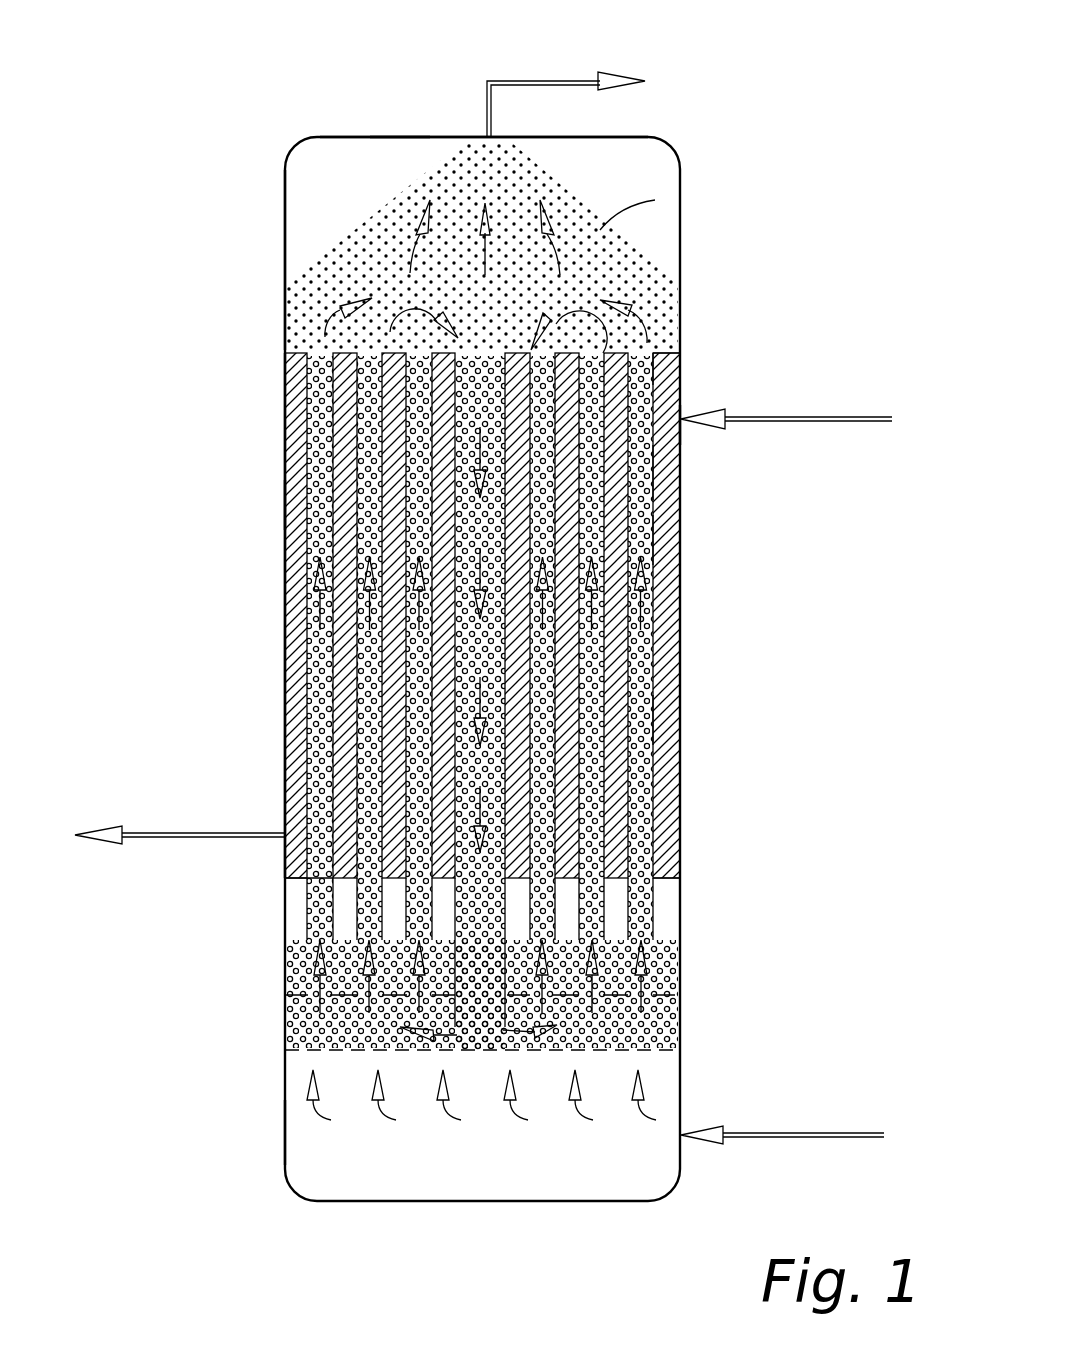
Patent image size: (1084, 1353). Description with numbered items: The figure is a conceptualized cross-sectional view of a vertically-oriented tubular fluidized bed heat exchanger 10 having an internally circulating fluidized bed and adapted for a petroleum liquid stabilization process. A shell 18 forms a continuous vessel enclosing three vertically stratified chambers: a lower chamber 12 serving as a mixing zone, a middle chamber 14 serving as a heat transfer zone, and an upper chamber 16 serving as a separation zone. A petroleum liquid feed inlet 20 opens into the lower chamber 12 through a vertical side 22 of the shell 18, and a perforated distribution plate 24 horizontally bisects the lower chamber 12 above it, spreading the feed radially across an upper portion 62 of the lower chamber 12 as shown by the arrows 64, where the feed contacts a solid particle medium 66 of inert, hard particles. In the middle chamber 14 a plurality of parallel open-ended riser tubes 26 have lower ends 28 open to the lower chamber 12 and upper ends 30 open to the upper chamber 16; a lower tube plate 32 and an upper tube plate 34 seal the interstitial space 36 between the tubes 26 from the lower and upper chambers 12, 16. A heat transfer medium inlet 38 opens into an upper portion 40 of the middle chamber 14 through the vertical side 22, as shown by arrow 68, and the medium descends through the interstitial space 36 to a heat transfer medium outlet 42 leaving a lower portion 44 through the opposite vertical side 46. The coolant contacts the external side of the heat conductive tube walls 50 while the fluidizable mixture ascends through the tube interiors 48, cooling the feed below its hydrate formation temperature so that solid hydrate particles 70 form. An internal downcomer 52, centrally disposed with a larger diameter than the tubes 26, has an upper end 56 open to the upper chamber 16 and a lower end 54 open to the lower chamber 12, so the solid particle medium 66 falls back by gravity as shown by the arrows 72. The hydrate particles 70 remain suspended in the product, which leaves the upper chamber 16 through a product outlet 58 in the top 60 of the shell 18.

The fluidized bed heat exchanger 10 is at (231, 58).
The lower chamber 12 is at (285, 1128).
The middle chamber 14 is at (285, 603).
The upper chamber 16 is at (285, 228).
The shell 18 is at (351, 137).
The petroleum liquid feed inlet 20 is at (681, 1140).
The vertical side 22 is at (681, 765).
The perforated distribution plate 24 is at (620, 1058).
The riser tubes 26 is at (681, 722).
The lower ends 28 is at (652, 925).
The upper ends 30 is at (660, 345).
The lower tube plate 32 is at (662, 880).
The upper tube plate 34 is at (658, 357).
The interstitial space 36 is at (681, 540).
The heat transfer medium inlet 38 is at (681, 425).
The upper portion 40 is at (681, 468).
The heat transfer medium outlet 42 is at (285, 830).
The lower portion 44 is at (285, 857).
The opposite vertical side 46 is at (285, 500).
The tube interiors 48 is at (322, 355).
The tube walls 50 is at (318, 380).
The internal downcomer 52 is at (480, 605).
The lower end 54 is at (492, 958).
The upper end 56 is at (483, 352).
The product outlet 58 is at (486, 137).
The top 60 is at (398, 137).
The upper portion 62 is at (287, 1000).
The arrows 64 is at (300, 1080).
The solid particle medium 66 is at (287, 960).
The arrow 68 is at (832, 421).
The solid hydrate particles 70 is at (570, 212).
The arrows 72 is at (480, 798).